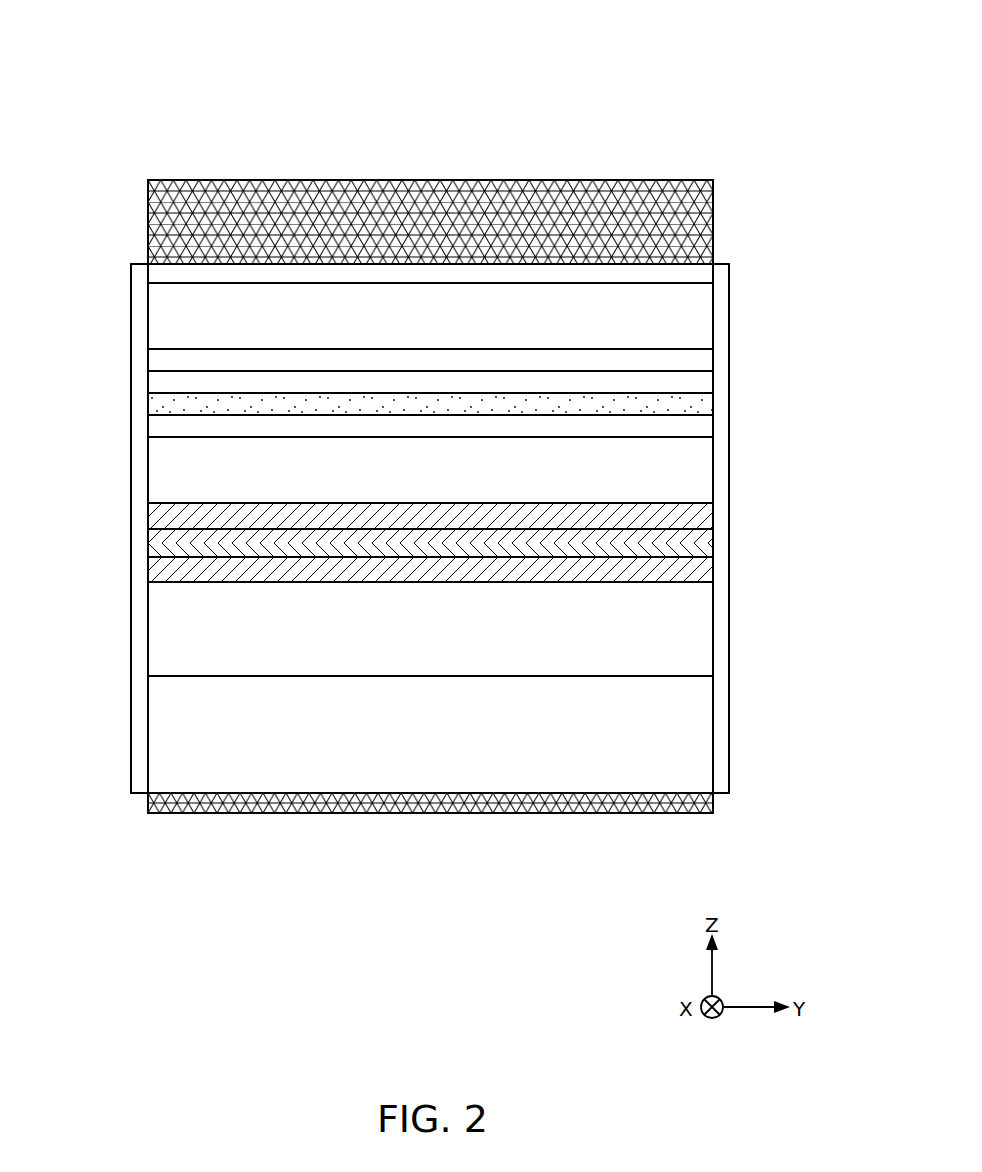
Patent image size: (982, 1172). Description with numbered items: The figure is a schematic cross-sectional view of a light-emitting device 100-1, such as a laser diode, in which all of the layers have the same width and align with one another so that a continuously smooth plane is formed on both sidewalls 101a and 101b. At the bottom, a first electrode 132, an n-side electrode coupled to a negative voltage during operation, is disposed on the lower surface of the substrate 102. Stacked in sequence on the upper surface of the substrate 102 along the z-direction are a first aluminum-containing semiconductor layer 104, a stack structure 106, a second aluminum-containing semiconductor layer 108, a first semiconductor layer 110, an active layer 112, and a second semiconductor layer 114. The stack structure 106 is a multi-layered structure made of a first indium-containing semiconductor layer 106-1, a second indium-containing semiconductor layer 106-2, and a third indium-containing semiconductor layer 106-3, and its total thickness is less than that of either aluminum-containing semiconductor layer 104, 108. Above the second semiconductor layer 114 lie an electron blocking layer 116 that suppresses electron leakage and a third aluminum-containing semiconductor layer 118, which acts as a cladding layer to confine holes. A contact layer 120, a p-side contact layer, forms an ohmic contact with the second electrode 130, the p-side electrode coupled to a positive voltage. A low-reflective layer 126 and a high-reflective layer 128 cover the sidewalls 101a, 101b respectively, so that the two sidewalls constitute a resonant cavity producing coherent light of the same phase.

The light-emitting device 100-1 is at (185, 52).
The sidewall 101a is at (722, 453).
The sidewall 101b is at (140, 480).
The substrate 102 is at (700, 736).
The first aluminum-containing semiconductor layer 104 is at (703, 631).
The stack structure 106 is at (505, 540).
The first indium-containing semiconductor layer 106-1 is at (703, 569).
The second indium-containing semiconductor layer 106-2 is at (703, 541).
The third indium-containing semiconductor layer 106-3 is at (703, 514).
The second aluminum-containing semiconductor layer 108 is at (703, 479).
The first semiconductor layer 110 is at (703, 431).
The active layer 112 is at (703, 406).
The second semiconductor layer 114 is at (703, 383).
The electron blocking layer 116 is at (703, 359).
The third aluminum-containing semiconductor layer 118 is at (703, 330).
The contact layer 120 is at (703, 275).
The low-reflective layer 126 is at (720, 302).
The high-reflective layer 128 is at (136, 348).
The second electrode 130 is at (703, 222).
The first electrode 132 is at (712, 800).